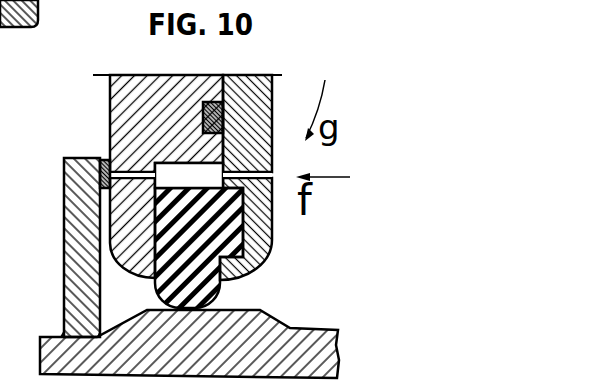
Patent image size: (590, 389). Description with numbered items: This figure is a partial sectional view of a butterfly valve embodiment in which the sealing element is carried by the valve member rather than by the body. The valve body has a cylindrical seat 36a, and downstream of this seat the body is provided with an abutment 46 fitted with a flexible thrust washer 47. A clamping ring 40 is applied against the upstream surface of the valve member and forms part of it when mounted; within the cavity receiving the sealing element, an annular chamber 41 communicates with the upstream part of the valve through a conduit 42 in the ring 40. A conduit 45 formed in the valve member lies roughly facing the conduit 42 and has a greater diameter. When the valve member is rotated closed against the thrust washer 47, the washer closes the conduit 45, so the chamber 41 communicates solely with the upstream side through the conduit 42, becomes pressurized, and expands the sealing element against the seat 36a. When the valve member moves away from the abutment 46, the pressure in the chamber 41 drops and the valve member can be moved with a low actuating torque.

The seat 36a is at (236, 307).
The clamping ring 40 is at (253, 95).
The annular chamber 41 is at (180, 178).
The conduit 42 is at (272, 177).
The conduit 45 is at (125, 172).
The abutment 46 is at (87, 252).
The flexible thrust washer 47 is at (100, 176).